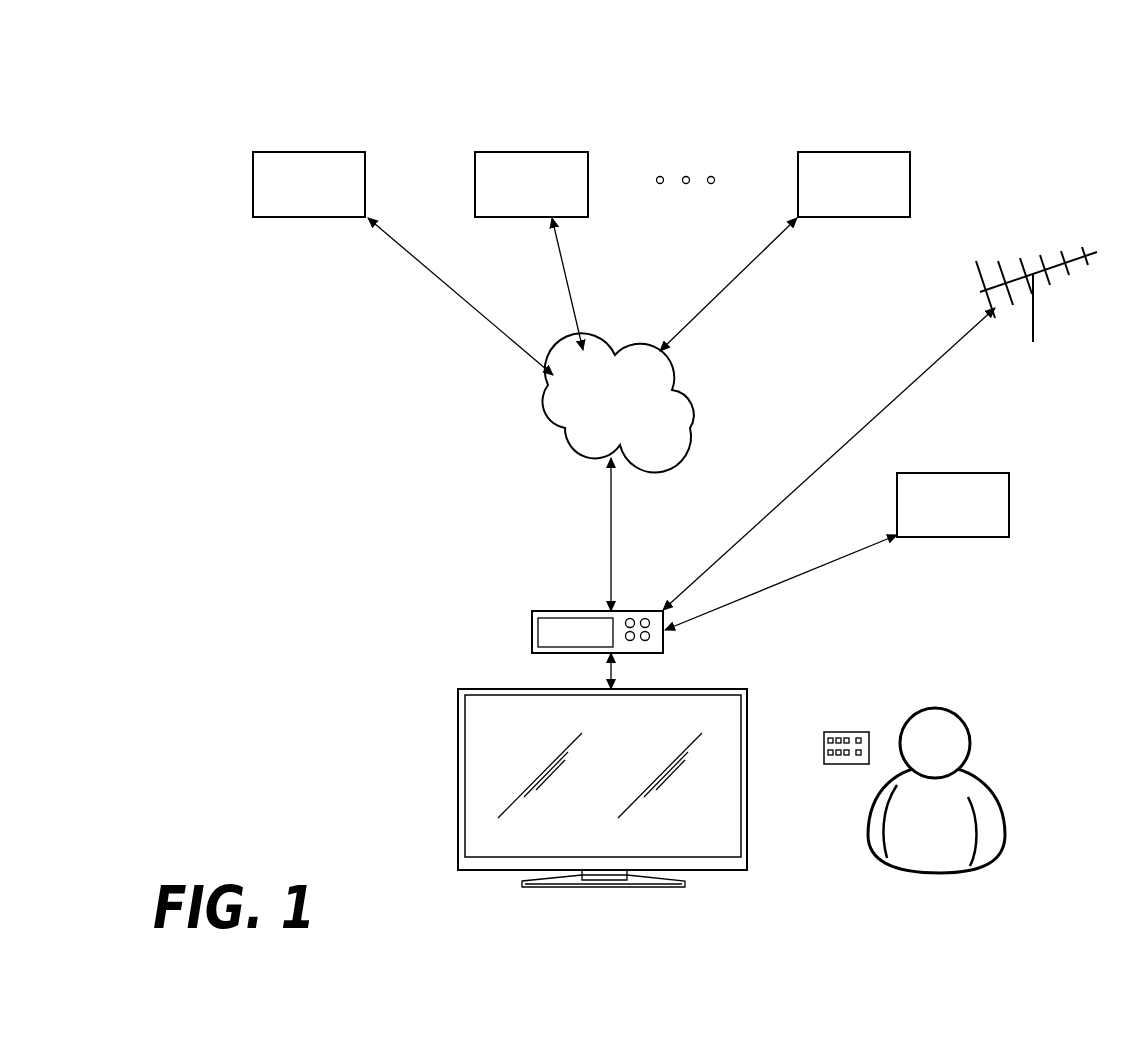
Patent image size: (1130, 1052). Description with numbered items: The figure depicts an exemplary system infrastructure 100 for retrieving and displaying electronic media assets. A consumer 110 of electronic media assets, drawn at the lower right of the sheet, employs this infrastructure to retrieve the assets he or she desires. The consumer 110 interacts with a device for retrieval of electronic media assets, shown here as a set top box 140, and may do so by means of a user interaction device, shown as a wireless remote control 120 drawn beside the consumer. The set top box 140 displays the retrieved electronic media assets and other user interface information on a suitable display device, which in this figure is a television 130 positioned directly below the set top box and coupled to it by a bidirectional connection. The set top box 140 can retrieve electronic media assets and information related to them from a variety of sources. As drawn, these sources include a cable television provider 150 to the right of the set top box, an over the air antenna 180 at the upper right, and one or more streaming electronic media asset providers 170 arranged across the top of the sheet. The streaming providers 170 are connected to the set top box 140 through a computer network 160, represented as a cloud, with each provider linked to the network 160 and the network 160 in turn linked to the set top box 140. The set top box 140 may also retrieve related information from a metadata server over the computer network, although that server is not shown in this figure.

The system infrastructure 100 is at (600, 35).
The consumer 110 is at (970, 752).
The wireless remote control 120 is at (858, 732).
The television 130 is at (458, 790).
The set top box 140 is at (532, 637).
The cable television provider 150 is at (1009, 500).
The network 160 is at (537, 404).
The streaming electronic media asset providers 170 is at (317, 152).
The over the air antenna 180 is at (1033, 318).